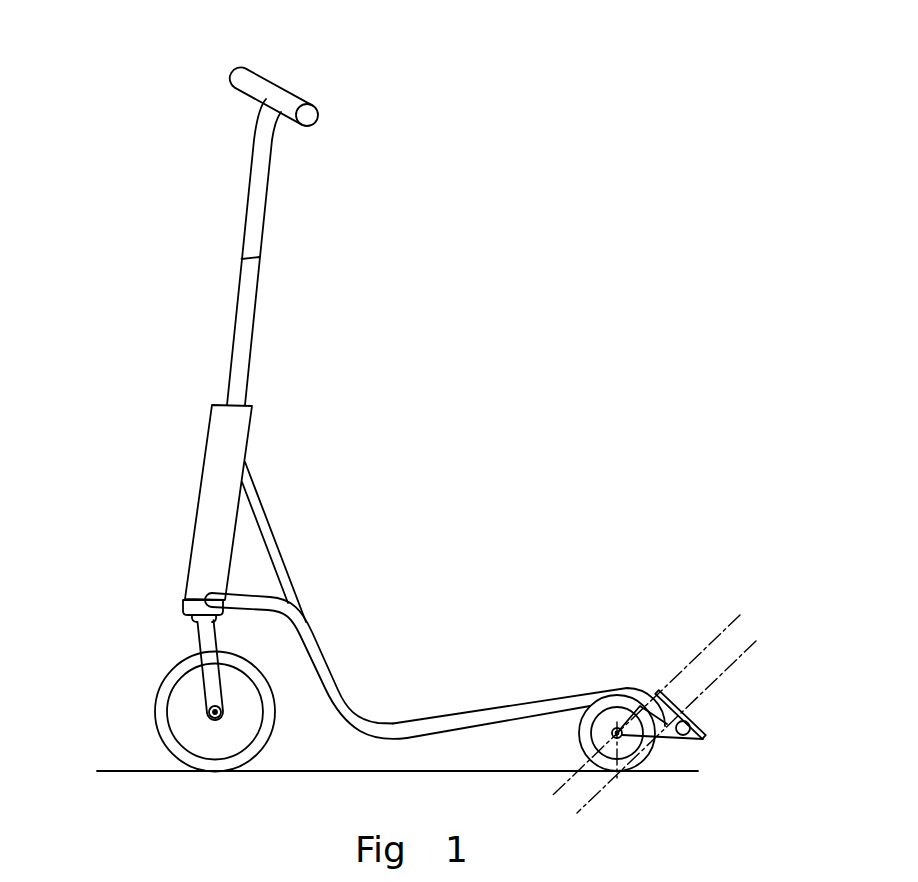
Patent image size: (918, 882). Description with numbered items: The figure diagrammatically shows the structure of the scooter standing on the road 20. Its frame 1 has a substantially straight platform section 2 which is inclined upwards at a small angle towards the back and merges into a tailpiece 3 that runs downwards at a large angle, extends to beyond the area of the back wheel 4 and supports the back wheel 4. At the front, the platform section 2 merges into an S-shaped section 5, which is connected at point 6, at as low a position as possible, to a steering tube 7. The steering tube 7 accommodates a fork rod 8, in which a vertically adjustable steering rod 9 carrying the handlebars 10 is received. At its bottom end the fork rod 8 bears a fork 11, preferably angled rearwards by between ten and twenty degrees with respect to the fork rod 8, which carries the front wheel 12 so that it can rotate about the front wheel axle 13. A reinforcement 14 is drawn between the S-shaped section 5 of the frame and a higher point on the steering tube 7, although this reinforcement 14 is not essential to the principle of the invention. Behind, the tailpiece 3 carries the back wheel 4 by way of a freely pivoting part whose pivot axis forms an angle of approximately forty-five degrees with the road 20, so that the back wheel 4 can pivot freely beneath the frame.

The frame 1 is at (454, 598).
The platform section 2 is at (528, 707).
The tailpiece 3 is at (669, 692).
The back wheel 4 is at (570, 743).
The S-shaped section 5 is at (323, 658).
The point 6 is at (210, 592).
The steering tube 7 is at (212, 445).
The fork rod 8 is at (245, 277).
The steering rod 9 is at (263, 150).
The handlebars 10 is at (266, 74).
The fork 11 is at (205, 638).
The front wheel 12 is at (167, 743).
The front wheel axle 13 is at (210, 713).
The reinforcement 14 is at (275, 532).
The road 20 is at (448, 772).